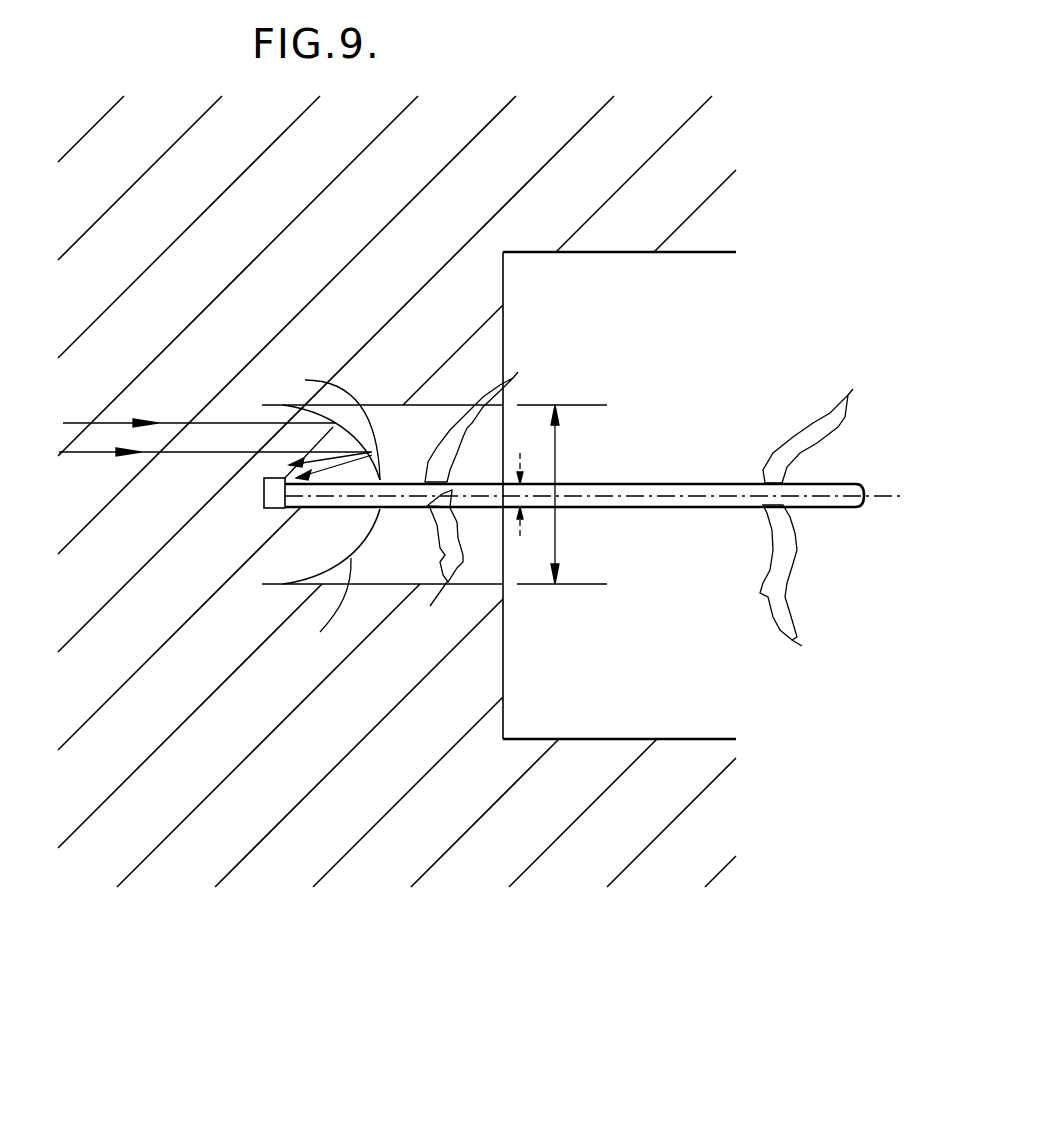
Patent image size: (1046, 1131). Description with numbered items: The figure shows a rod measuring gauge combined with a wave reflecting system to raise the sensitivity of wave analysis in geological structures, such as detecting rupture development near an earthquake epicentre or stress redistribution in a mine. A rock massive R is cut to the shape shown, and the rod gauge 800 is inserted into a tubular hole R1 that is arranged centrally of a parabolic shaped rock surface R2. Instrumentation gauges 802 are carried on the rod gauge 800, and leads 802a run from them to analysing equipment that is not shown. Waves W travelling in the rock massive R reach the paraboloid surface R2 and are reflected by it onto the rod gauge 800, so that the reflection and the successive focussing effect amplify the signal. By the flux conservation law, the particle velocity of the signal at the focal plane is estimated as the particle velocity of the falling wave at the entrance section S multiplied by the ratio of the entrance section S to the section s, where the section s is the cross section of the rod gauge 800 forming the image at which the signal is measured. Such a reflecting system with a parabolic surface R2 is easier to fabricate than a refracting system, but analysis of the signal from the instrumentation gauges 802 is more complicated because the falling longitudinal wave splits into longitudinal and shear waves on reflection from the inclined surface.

The rod gauge 800 is at (708, 507).
The instrumentation gauges 802 is at (436, 478).
The leads 802a is at (654, 513).
The rock massive R is at (397, 491).
The tubular hole R1 is at (434, 419).
The parabolic shaped rock surface R2 is at (434, 586).
The waves W is at (215, 441).
The entrance section S is at (565, 494).
The section of the image s is at (527, 495).